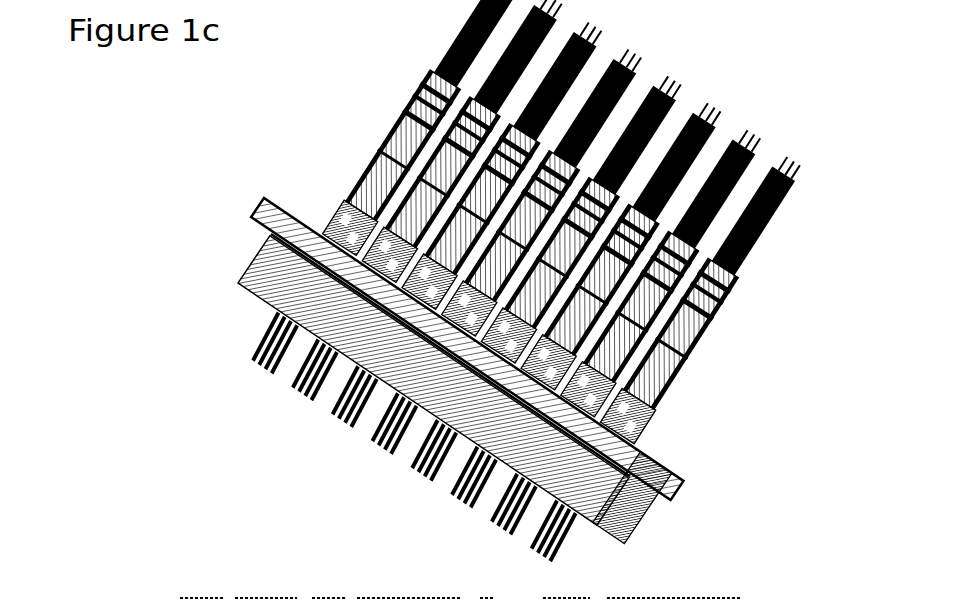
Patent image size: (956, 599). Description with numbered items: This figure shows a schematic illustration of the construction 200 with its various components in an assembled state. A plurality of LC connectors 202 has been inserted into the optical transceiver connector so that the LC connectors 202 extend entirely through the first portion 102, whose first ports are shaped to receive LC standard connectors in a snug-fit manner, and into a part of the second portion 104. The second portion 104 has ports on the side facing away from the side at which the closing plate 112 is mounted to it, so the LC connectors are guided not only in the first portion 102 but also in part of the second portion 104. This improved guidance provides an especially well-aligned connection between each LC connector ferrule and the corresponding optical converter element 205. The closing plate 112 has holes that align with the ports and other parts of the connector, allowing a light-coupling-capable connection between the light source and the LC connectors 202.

The construction 200 is at (247, 453).
The LC connectors 202 is at (378, 147).
The first portion 102 is at (260, 207).
The second portion 104 is at (240, 278).
The optical converter elements 205 is at (253, 350).
The closing plate 112 is at (613, 540).